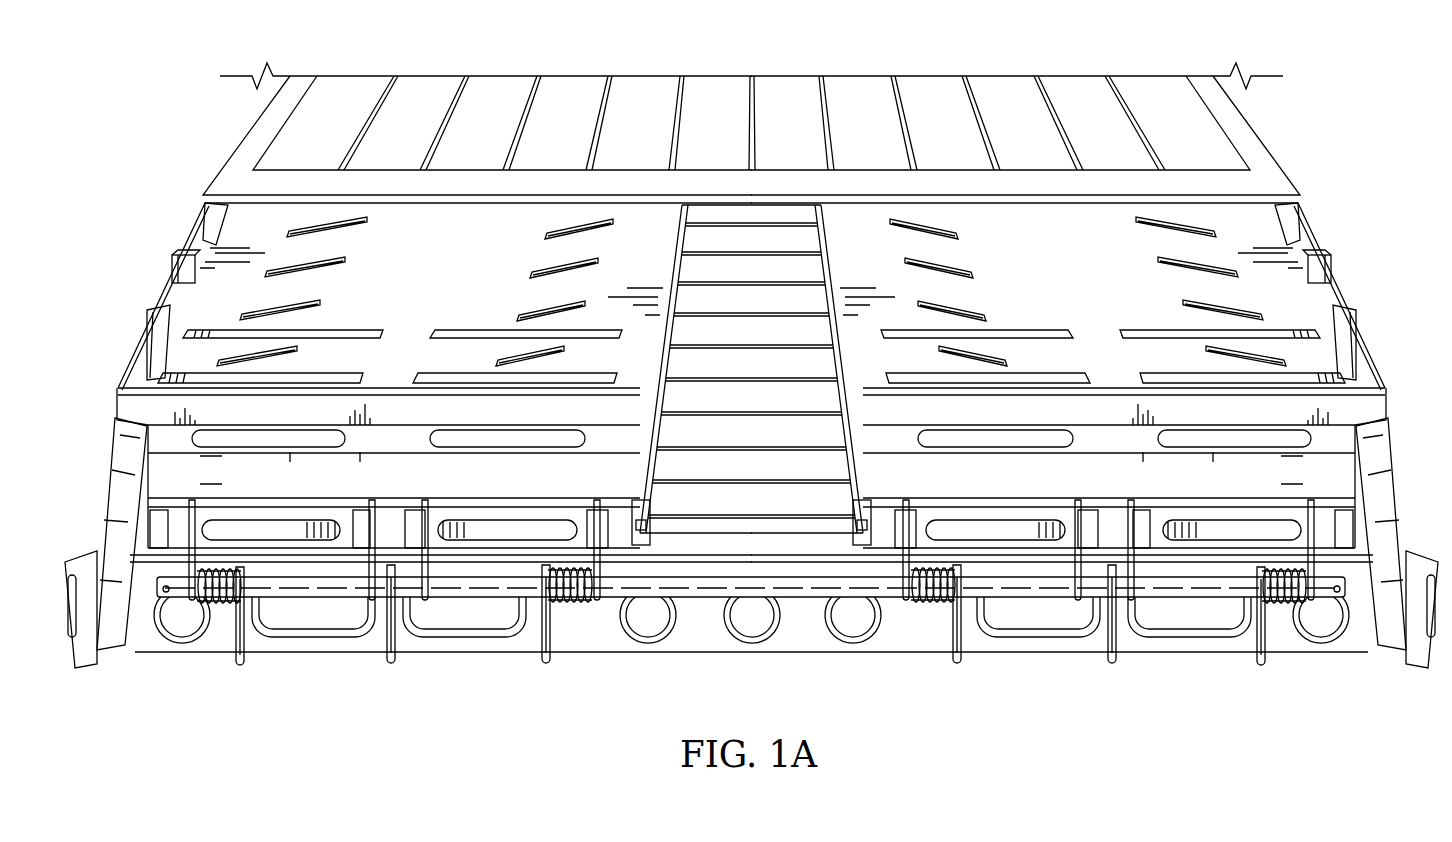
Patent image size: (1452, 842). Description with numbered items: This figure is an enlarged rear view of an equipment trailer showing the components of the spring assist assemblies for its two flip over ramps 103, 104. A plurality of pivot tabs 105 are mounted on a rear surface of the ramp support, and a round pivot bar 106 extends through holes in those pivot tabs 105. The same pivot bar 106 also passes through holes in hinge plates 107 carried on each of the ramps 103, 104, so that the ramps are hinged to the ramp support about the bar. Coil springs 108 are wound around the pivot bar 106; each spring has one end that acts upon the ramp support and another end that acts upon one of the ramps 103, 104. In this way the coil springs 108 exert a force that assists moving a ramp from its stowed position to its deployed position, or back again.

The flip over ramp 103 is at (195, 298).
The flip over ramp 104 is at (1308, 298).
The pivot tab 105 is at (240, 665).
The pivot bar 106 is at (700, 597).
The hinge plate 107 is at (192, 590).
The coil spring 108 is at (215, 603).